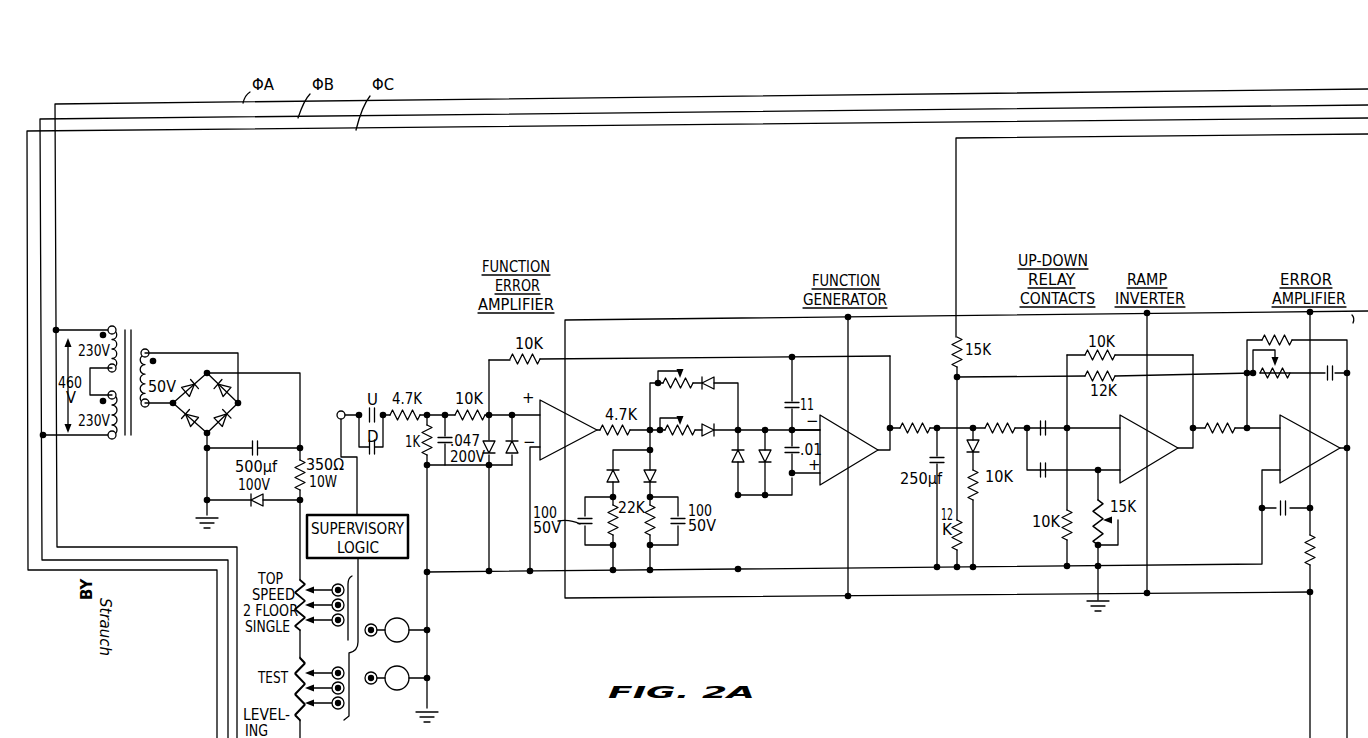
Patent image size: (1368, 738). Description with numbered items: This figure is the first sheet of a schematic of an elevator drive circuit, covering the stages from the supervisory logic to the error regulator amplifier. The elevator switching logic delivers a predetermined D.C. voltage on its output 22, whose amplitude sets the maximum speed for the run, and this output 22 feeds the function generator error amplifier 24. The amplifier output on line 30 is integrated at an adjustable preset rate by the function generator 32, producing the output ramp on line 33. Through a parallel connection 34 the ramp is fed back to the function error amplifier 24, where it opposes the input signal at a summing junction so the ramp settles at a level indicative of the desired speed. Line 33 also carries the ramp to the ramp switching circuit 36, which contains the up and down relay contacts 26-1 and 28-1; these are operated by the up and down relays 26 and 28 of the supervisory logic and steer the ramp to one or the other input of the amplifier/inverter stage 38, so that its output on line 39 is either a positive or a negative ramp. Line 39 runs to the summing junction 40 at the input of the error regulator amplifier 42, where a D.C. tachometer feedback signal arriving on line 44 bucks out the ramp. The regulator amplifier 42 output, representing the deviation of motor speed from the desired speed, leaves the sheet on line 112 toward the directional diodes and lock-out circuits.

The output of the elevator switching logic 22 is at (338, 413).
The function generator error amplifier 24 is at (484, 360).
The up relay 26 is at (396, 620).
The down relay 28 is at (397, 692).
The up relay contact 26-1 is at (1037, 416).
The down relay contact 28-1 is at (1040, 478).
The output line of the function error amplifier 30 is at (601, 422).
The function generator 32 is at (829, 382).
The function generator output 33 is at (893, 443).
The parallel connection 34 is at (695, 358).
The ramp switching circuit 36 is at (1054, 366).
The amplifier/inverter stage 38 is at (1163, 368).
The output line of the amplifier/inverter stage 39 is at (1196, 452).
The summing junction 40 is at (1245, 440).
The error regulator amplifier 42 is at (1303, 386).
The tachometer feedback line 44 is at (1101, 140).
The output line of the regulator amplifier 112 is at (1347, 630).